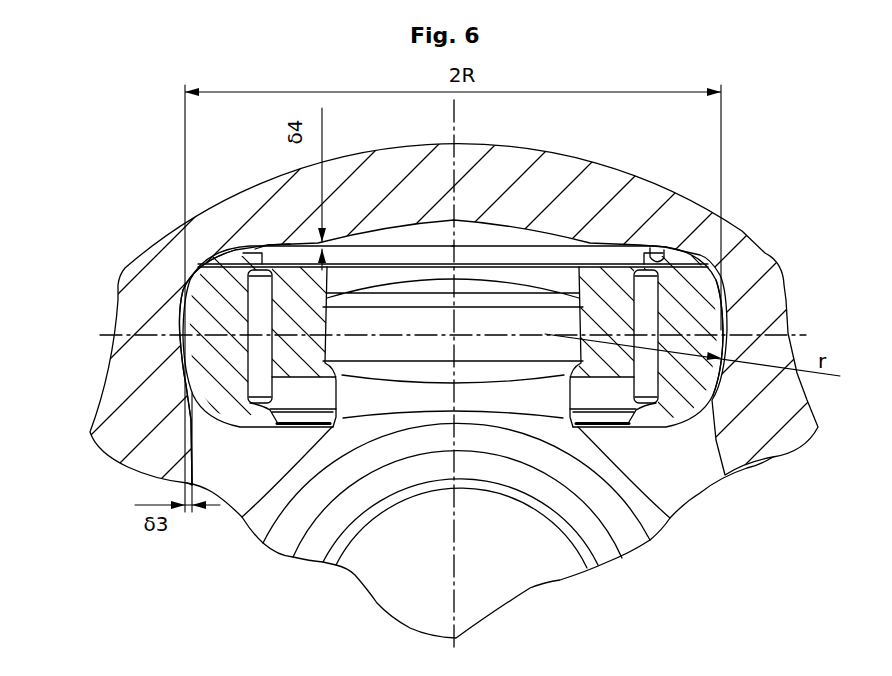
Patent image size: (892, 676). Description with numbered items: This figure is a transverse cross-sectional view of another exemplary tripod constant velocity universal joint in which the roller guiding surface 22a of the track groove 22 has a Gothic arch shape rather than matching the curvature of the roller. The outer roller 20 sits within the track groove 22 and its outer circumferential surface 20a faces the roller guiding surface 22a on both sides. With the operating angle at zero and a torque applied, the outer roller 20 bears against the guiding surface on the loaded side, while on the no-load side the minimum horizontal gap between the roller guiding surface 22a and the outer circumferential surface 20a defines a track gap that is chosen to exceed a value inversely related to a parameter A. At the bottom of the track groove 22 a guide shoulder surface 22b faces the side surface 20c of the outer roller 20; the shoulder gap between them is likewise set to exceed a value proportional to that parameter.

The outer roller 20 is at (712, 400).
The outer circumferential surface 20a is at (180, 357).
The side surface 20c is at (275, 243).
The track groove 22 is at (490, 246).
The roller guiding surface 22a is at (714, 290).
The guide shoulder surface 22b is at (655, 258).